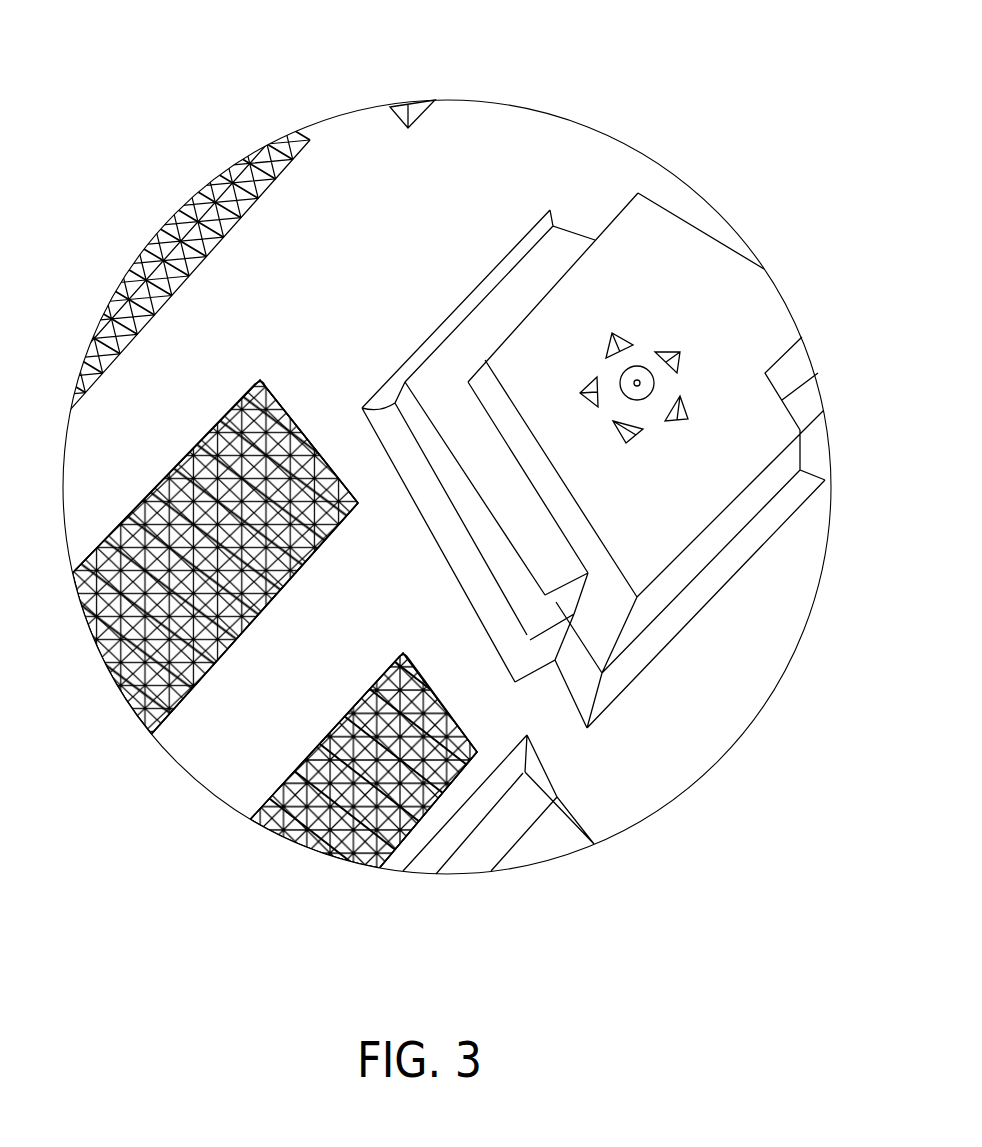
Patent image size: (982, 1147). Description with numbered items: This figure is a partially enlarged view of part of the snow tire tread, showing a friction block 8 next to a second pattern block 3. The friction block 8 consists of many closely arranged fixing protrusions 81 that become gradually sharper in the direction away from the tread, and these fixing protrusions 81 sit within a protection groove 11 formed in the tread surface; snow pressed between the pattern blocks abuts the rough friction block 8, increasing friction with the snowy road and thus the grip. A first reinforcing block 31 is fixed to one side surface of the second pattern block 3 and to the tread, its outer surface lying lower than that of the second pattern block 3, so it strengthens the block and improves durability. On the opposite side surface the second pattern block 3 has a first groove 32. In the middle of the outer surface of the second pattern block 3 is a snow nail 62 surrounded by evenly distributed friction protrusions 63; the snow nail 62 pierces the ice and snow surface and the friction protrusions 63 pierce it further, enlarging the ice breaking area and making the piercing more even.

The second pattern block 3 is at (647, 272).
The first reinforcing block 31 is at (518, 283).
The first groove 32 is at (792, 377).
The friction block 8 is at (205, 430).
The fixing protrusions 81 is at (353, 862).
The protection groove 11 is at (203, 660).
The snow nail 62 is at (639, 394).
The friction protrusions 63 is at (590, 405).